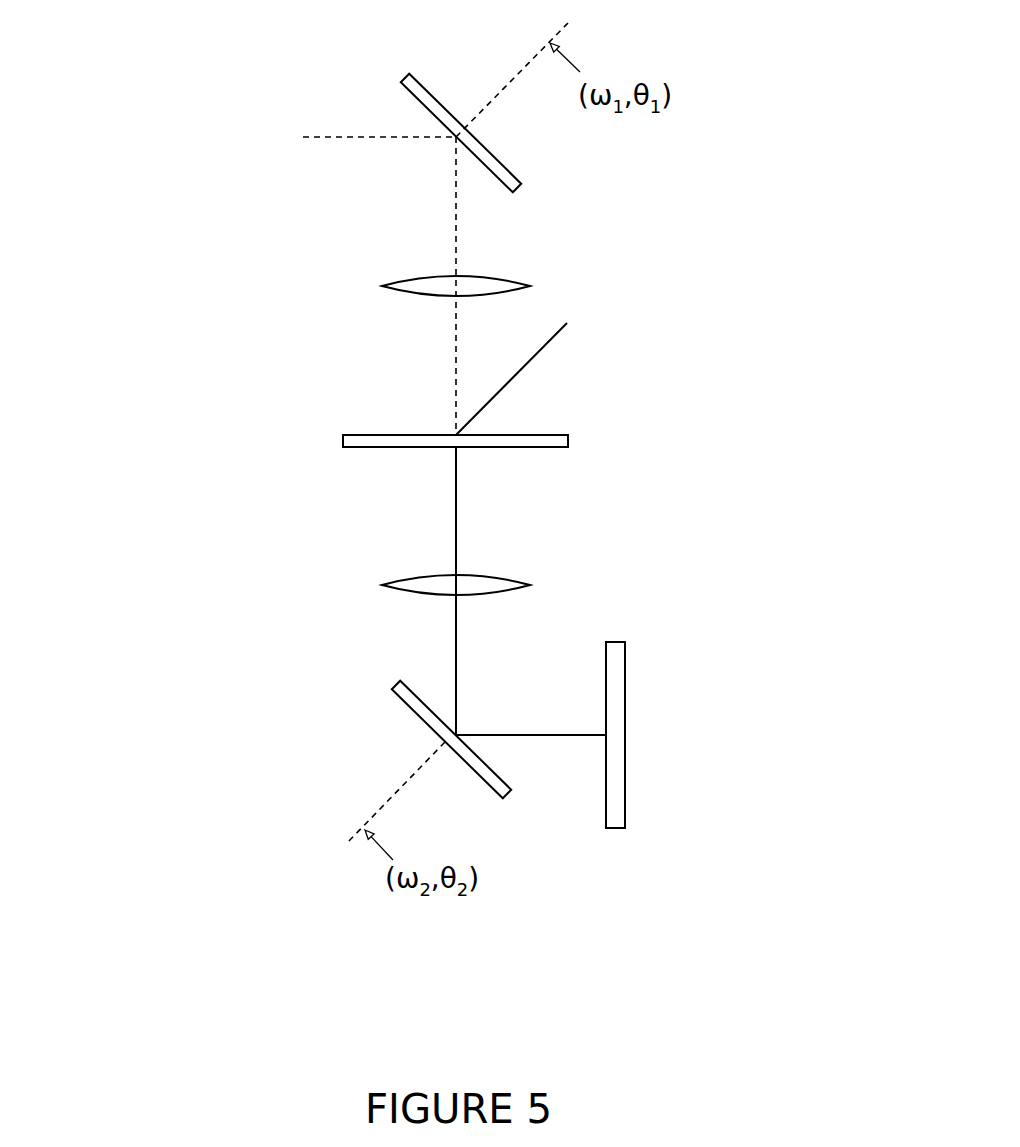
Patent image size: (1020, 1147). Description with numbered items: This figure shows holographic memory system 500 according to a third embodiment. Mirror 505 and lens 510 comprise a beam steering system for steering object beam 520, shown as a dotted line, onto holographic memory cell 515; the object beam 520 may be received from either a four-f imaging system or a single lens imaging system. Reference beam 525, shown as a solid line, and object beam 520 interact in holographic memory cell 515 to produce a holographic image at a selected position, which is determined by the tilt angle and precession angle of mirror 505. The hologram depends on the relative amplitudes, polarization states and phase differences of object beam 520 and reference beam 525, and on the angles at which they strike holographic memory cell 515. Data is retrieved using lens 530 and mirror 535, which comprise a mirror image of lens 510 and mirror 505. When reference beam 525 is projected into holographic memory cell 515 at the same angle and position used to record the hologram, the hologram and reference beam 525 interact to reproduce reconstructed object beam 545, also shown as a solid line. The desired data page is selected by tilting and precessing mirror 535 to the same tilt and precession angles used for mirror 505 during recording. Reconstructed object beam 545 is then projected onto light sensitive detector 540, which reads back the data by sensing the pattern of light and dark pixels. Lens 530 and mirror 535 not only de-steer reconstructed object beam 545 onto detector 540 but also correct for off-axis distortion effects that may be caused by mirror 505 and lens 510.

The holographic memory system 500 is at (109, 819).
The mirror 505 is at (408, 64).
The lens 510 is at (373, 287).
The holographic memory cell 515 is at (334, 436).
The object beam 520 is at (323, 128).
The reference beam 525 is at (574, 330).
The lens 530 is at (373, 586).
The mirror 535 is at (383, 688).
The light sensitive detector 540 is at (616, 838).
The reconstructed object beam 545 is at (446, 493).